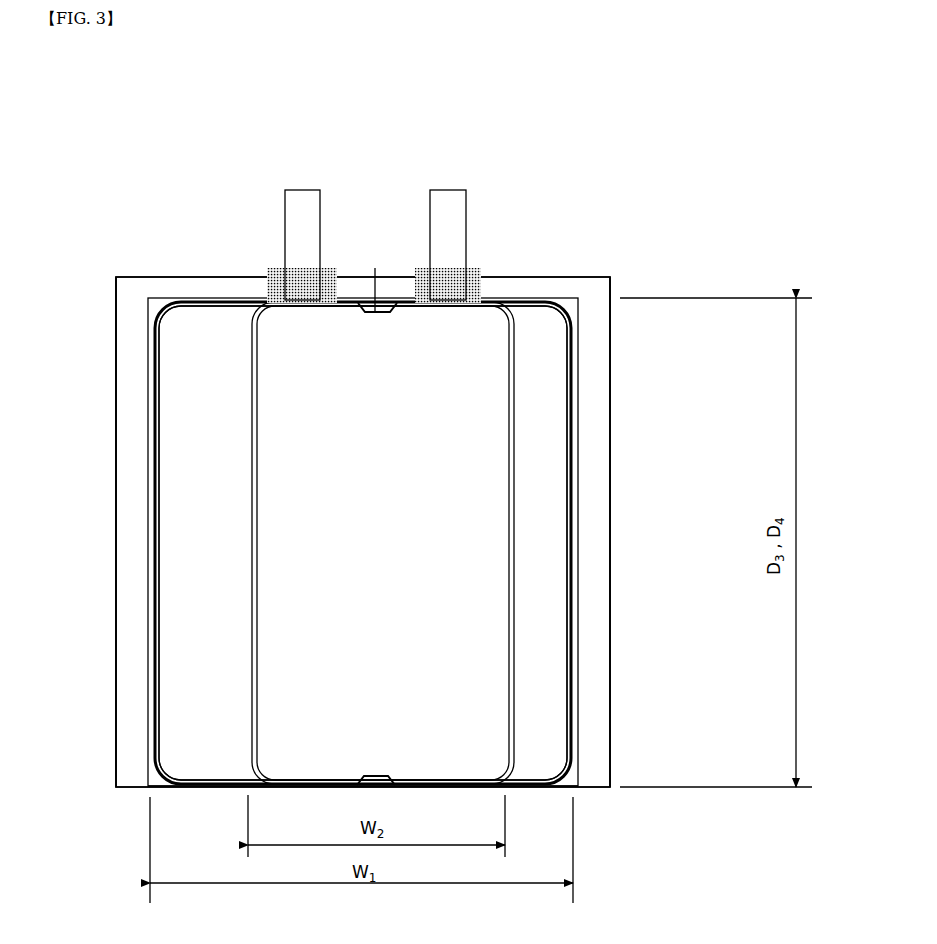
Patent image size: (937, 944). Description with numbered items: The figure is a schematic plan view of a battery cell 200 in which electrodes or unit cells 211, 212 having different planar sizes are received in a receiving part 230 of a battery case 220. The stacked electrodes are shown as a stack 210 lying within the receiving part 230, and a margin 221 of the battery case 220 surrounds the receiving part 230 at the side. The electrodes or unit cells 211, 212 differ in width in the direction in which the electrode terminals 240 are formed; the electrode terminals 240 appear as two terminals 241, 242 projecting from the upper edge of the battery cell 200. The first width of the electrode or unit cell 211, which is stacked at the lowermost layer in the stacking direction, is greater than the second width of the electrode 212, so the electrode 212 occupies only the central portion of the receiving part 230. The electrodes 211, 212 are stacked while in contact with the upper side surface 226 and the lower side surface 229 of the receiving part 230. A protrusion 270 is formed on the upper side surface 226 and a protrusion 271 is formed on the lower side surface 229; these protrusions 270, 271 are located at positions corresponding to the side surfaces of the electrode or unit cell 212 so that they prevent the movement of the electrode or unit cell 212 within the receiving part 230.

The battery cell 200 is at (120, 127).
The electrode assembly 210 is at (571, 385).
The electrode or unit cell 211 is at (540, 437).
The electrode or unit cell 212 is at (465, 512).
The battery case 220 is at (612, 315).
The first sealing part 221 is at (135, 283).
The upper side surface 226 is at (520, 300).
The lower side surface 229 is at (383, 783).
The receiving part 230 is at (581, 350).
The electrode terminals 240 is at (381, 195).
The first electrode lead 241 is at (305, 208).
The second electrode lead 242 is at (455, 225).
The protrusion 270 is at (375, 268).
The protrusion 271 is at (432, 790).